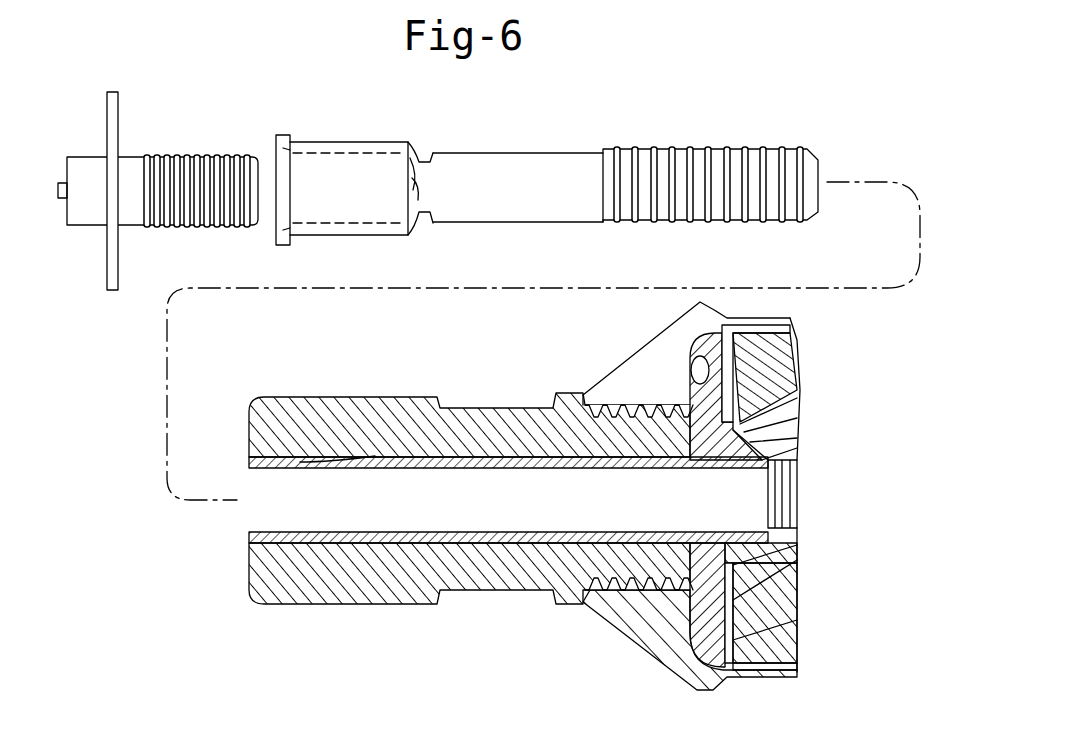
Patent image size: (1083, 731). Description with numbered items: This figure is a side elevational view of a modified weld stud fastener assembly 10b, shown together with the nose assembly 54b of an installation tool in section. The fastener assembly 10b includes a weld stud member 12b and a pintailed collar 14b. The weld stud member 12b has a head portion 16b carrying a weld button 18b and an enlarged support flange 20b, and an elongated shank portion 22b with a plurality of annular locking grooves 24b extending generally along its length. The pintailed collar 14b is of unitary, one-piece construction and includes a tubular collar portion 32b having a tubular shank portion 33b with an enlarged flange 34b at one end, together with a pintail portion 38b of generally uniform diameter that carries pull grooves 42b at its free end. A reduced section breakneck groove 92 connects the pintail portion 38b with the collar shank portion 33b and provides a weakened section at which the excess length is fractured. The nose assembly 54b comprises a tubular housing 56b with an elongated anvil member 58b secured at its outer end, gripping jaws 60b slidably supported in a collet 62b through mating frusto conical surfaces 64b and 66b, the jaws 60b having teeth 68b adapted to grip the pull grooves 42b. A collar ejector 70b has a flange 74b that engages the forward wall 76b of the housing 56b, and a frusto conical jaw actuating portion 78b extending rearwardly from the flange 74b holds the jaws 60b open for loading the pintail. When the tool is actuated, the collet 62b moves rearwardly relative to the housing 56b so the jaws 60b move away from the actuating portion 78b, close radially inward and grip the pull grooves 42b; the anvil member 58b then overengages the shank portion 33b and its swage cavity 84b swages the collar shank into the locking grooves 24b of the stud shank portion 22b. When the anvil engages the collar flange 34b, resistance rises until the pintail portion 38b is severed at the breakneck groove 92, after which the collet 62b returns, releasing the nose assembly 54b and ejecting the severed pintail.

The weld stud fastener assembly 10b is at (705, 105).
The weld stud member 12b is at (202, 124).
The pintailed collar 14b is at (571, 228).
The head portion 16b is at (92, 212).
The weld button 18b is at (60, 188).
The enlarged support flange 20b is at (120, 92).
The shank portion 22b is at (164, 155).
The annular locking grooves 24b is at (162, 225).
The tubular collar portion 32b is at (313, 140).
The tubular shank portion 33b is at (360, 236).
The enlarged flange 34b is at (285, 240).
The pintail portion 38b is at (524, 162).
The pull grooves 42b is at (680, 150).
The nose assembly 54b is at (576, 602).
The tubular housing 56b is at (652, 622).
The anvil member 58b is at (372, 405).
The gripping jaws 60b is at (795, 405).
The collet 62b is at (785, 355).
The frusto conical surface 64b is at (792, 385).
The frusto conical surface 66b is at (765, 428).
The teeth 68b is at (800, 490).
The collar ejector 70b is at (466, 443).
The flange 74b is at (740, 645).
The forward wall 76b is at (690, 352).
The jaw actuating portion 78b is at (757, 542).
The swage cavity 84b is at (300, 530).
The breakneck groove 92 is at (423, 160).